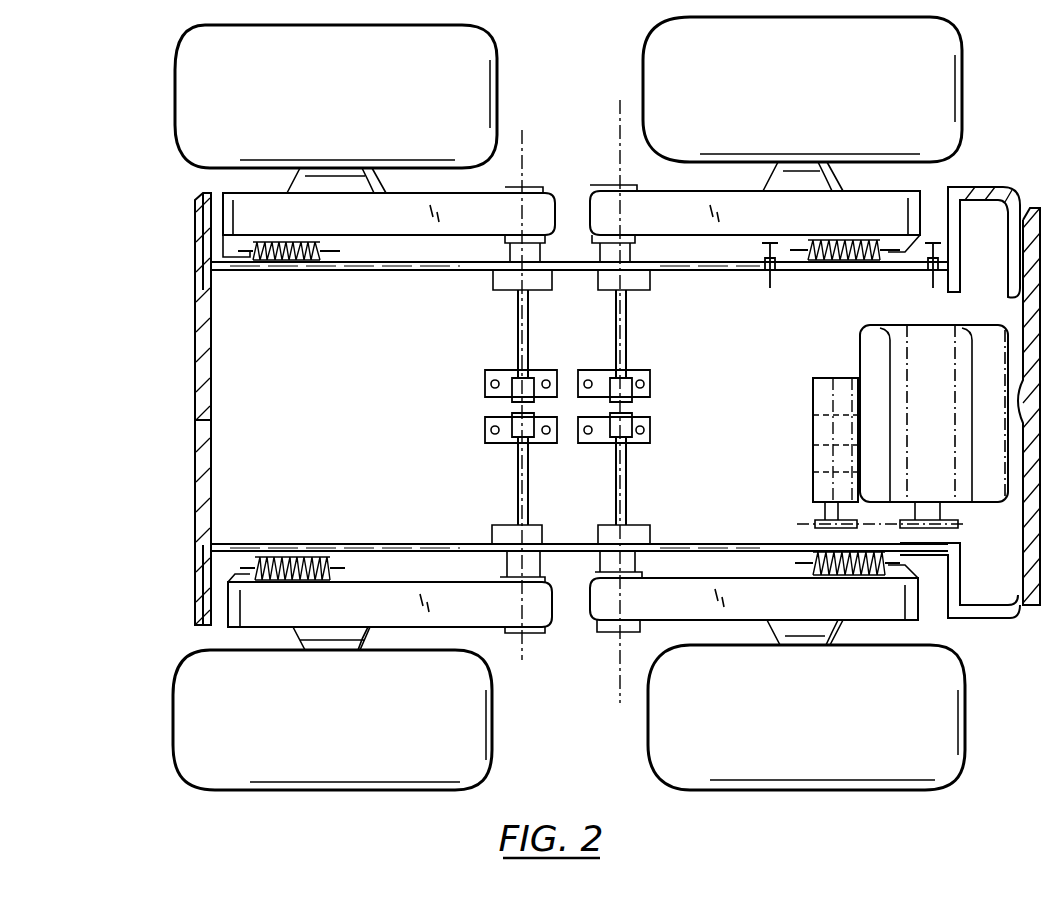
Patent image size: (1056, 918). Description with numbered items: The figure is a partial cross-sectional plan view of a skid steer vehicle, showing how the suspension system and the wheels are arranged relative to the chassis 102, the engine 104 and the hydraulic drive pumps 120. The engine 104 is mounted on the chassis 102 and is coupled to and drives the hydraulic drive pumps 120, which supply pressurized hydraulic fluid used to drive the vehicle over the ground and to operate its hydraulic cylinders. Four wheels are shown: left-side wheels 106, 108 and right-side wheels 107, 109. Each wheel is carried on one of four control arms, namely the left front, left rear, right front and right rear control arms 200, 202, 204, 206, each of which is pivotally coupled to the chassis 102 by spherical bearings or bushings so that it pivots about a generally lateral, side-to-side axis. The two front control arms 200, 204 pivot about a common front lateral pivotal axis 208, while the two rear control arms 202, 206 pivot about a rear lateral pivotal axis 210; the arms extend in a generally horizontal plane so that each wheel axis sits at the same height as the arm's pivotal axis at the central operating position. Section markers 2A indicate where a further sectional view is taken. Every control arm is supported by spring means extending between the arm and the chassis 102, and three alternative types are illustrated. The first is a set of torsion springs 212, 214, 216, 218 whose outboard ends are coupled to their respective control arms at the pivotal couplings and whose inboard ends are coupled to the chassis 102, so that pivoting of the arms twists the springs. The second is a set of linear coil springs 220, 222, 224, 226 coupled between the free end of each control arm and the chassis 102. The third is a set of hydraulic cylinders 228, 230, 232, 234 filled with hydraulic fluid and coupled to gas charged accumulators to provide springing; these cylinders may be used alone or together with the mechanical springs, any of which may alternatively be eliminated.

The chassis 102 is at (348, 421).
The engine 104 is at (858, 345).
The left-side wheel 106 is at (308, 732).
The right-side wheel 107 is at (332, 100).
The left-side wheel 108 is at (783, 730).
The right-side wheel 109 is at (780, 84).
The hydraulic drive pumps 120 is at (812, 399).
The left front control arm 200 is at (218, 627).
The left rear control arm 202 is at (915, 620).
The right front control arm 204 is at (223, 193).
The right rear control arm 206 is at (935, 191).
The front lateral pivotal axis 208 is at (522, 152).
The rear lateral pivotal axis 210 is at (620, 113).
The torsion spring 212 is at (516, 474).
The torsion spring 214 is at (616, 475).
The torsion spring 216 is at (516, 334).
The torsion spring 218 is at (616, 339).
The coil spring 220 is at (310, 582).
The coil spring 222 is at (865, 582).
The coil spring 224 is at (298, 268).
The coil spring 226 is at (852, 264).
The hydraulic cylinder 228 is at (294, 556).
The hydraulic cylinder 230 is at (850, 555).
The hydraulic cylinder 232 is at (290, 246).
The hydraulic cylinder 234 is at (858, 244).
The section line 2A is at (849, 282).